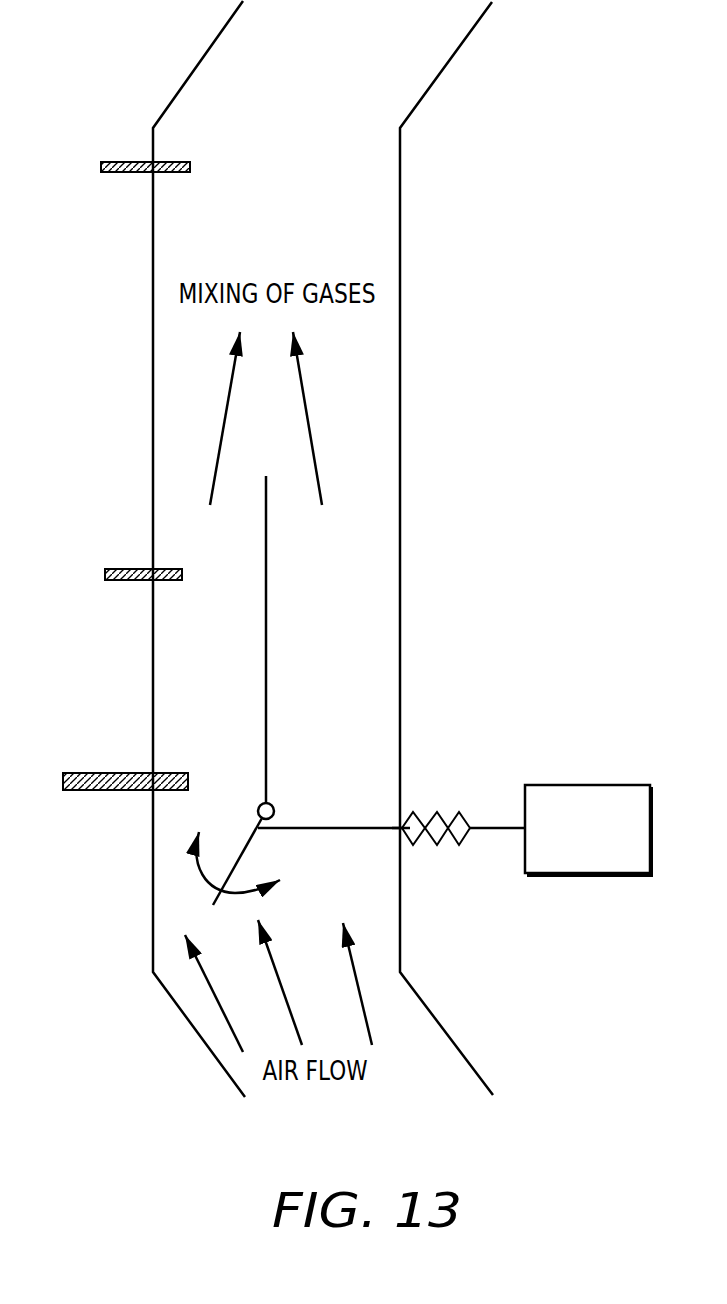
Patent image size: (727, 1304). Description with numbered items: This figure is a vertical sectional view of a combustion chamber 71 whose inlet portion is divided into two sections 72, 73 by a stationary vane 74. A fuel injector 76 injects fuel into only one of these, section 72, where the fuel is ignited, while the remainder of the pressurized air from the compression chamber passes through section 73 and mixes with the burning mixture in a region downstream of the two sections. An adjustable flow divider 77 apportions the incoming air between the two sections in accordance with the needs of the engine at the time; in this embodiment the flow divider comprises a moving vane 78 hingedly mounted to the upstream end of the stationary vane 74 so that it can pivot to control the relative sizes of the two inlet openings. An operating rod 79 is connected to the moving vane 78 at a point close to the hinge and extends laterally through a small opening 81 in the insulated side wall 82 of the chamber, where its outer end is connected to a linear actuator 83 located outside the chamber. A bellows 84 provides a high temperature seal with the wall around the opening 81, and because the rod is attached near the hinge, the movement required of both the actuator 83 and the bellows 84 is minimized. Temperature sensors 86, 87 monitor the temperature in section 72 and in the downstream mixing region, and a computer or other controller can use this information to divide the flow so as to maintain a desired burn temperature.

The combustion chamber 71 is at (343, 549).
The section 72 is at (223, 647).
The section 73 is at (345, 647).
The stationary vane 74 is at (266, 595).
The fuel injector 76 is at (132, 773).
The adjustable flow divider 77 is at (235, 840).
The moving vane 78 is at (238, 862).
The operating rod 79 is at (357, 828).
The small opening 81 is at (403, 832).
The insulated side wall 82 is at (400, 653).
The linear actuator 83 is at (588, 785).
The bellows 84 is at (420, 818).
The temperature sensor 86 is at (132, 569).
The temperature sensor 87 is at (127, 162).